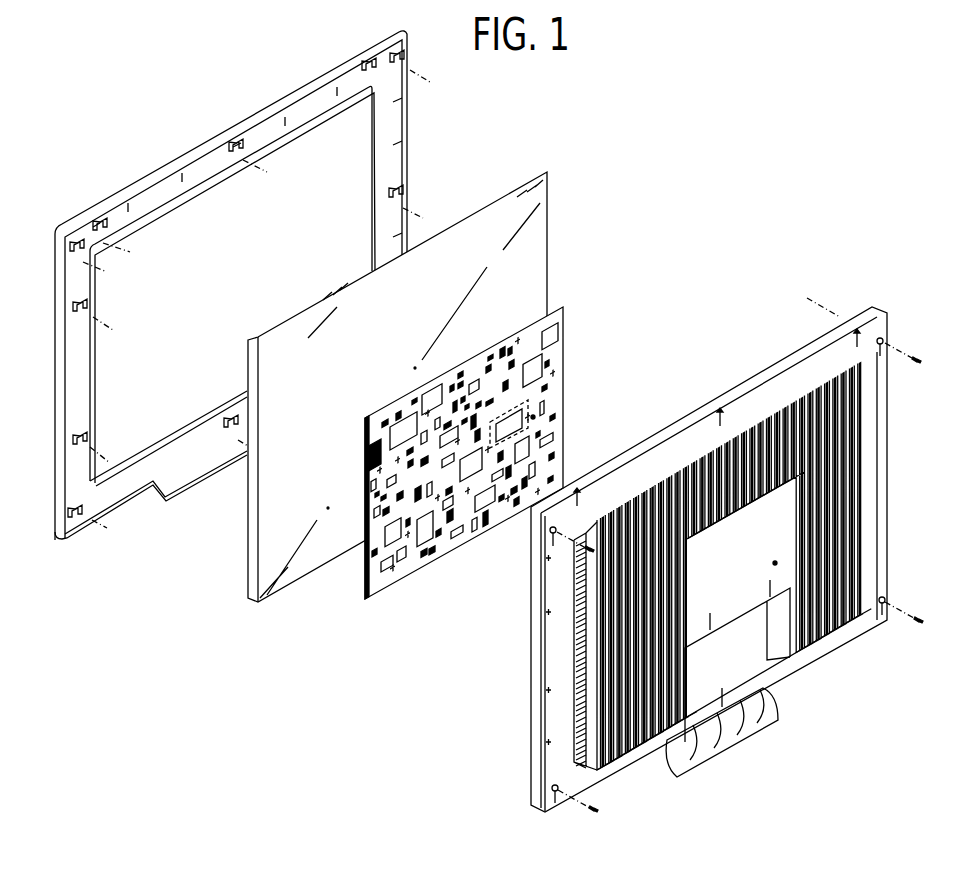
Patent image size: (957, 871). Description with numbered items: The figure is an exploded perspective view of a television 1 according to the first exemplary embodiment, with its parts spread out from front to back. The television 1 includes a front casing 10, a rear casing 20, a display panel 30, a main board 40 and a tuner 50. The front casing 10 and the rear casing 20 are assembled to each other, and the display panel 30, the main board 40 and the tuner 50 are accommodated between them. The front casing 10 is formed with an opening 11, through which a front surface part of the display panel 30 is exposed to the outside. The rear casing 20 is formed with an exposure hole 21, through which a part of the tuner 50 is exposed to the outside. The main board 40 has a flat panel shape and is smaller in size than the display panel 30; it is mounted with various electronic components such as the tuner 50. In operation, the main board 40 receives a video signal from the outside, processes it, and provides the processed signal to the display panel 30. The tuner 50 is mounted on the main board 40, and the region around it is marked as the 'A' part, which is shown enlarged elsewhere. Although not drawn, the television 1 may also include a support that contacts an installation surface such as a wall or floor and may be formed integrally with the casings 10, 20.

The television 1 is at (688, 133).
The front casing 10 is at (158, 165).
The opening 11 is at (300, 185).
The rear casing 20 is at (727, 555).
The exposure hole 21 is at (776, 565).
The display panel 30 is at (549, 218).
The main board 40 is at (566, 348).
The tuner 50 is at (534, 417).
The 'A' part A is at (513, 445).